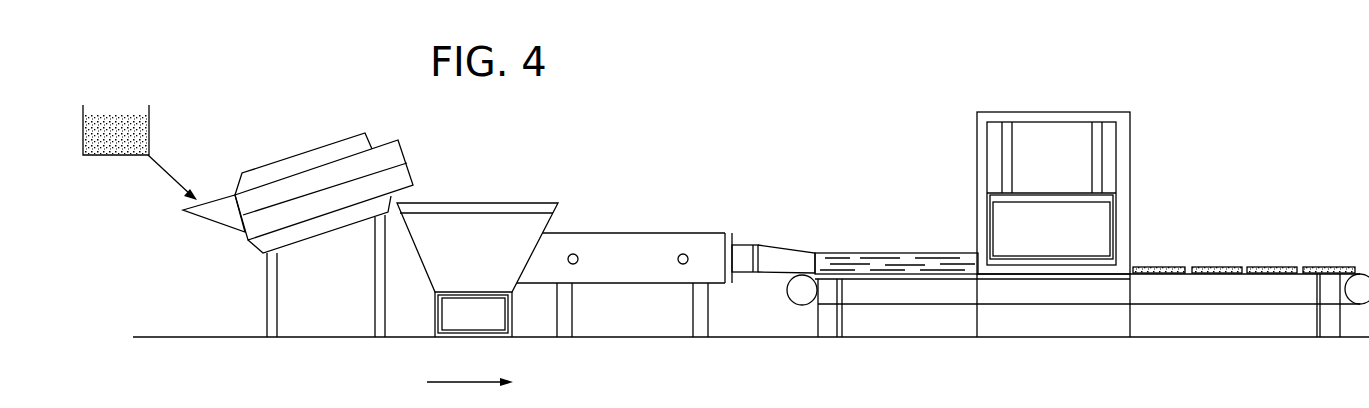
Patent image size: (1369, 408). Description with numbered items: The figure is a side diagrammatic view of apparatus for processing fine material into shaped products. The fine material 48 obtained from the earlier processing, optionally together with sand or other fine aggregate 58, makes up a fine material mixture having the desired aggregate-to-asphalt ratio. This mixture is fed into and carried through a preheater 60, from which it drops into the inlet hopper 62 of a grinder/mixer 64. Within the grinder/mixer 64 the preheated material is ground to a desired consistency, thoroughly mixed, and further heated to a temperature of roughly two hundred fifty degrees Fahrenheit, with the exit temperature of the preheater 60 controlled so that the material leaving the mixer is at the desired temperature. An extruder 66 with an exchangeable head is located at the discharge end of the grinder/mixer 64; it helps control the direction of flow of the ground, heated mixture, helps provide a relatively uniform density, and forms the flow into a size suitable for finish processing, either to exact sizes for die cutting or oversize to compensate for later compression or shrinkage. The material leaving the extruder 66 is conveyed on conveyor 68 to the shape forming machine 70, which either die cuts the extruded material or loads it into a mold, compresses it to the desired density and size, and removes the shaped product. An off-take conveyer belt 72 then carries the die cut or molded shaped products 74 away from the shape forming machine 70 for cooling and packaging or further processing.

The fine material 48 is at (211, 182).
The sand or other fine aggregate 58 is at (90, 155).
The preheater 60 is at (308, 148).
The inlet hopper 62 is at (423, 267).
The grinder/mixer 64 is at (640, 235).
The extruder 66 is at (773, 278).
The conveyor 68 is at (895, 305).
The shape forming machine 70 is at (1127, 148).
The off-take conveyer belt 72 is at (1237, 305).
The shaped products 74 is at (1340, 267).